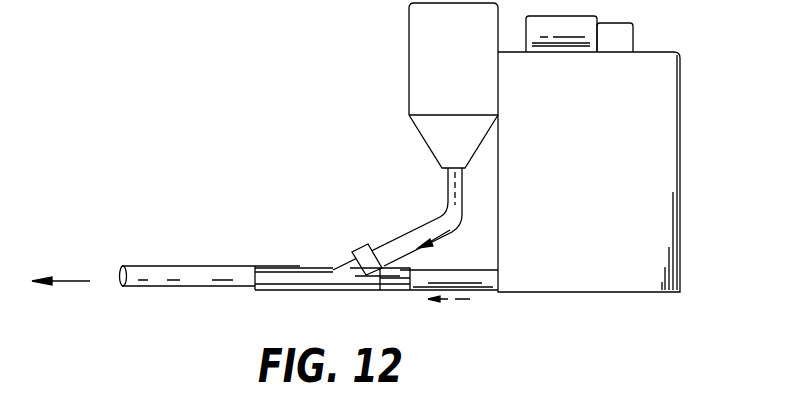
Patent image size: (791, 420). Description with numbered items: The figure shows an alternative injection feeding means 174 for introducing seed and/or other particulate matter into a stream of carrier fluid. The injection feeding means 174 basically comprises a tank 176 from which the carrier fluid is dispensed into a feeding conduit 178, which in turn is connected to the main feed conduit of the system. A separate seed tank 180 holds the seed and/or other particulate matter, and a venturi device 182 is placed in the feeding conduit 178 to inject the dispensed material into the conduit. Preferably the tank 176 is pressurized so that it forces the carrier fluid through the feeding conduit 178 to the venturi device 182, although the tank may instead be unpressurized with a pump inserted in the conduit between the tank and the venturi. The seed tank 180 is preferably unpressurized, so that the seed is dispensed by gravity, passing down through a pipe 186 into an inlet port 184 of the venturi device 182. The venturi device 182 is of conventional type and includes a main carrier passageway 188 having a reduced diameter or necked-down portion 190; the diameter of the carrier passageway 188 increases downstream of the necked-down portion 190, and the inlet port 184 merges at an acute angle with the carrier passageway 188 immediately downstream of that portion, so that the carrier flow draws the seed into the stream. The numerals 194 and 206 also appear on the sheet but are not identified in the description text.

The injection feeding means 174 is at (364, 142).
The tank 176 is at (652, 134).
The feeding conduit 178 is at (488, 283).
The seed tank 180 is at (448, 40).
The venturi device 182 is at (346, 288).
The inlet port 184 is at (352, 250).
The pipe 186 is at (415, 222).
The carrier passageway 188 is at (412, 268).
The necked-down portion 190 is at (385, 290).
The housing 194 is at (222, 8).
The fluid outlet 206 is at (135, 14).